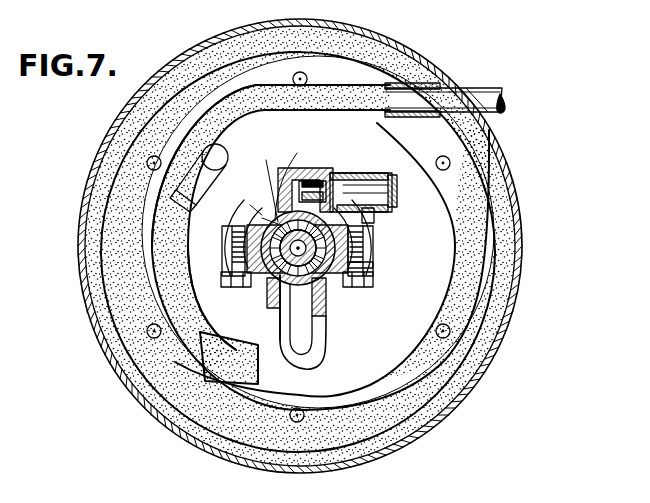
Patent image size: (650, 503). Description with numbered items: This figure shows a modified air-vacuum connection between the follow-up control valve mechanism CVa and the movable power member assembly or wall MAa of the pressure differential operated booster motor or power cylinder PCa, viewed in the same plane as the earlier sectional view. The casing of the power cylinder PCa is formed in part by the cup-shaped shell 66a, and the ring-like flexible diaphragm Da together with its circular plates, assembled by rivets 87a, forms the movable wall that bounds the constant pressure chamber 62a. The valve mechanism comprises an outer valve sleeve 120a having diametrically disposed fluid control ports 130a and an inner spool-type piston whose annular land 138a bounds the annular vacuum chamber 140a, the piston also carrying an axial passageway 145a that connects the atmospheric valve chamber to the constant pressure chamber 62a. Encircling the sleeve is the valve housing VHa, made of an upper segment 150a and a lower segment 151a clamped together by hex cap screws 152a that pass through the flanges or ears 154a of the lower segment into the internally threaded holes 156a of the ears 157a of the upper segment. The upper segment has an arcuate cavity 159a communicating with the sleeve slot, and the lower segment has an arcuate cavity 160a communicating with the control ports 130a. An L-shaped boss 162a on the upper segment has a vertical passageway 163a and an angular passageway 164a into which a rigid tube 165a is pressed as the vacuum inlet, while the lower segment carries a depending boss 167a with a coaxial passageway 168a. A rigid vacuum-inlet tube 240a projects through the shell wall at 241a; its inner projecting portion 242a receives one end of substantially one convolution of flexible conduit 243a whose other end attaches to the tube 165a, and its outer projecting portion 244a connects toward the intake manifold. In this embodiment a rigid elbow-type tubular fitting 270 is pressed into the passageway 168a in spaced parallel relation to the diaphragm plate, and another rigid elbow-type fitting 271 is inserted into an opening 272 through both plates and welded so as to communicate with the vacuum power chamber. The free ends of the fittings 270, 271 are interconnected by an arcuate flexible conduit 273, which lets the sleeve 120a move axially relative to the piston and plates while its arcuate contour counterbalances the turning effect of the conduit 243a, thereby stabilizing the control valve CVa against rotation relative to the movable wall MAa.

The constant pressure chamber 62a is at (501, 229).
The cup-shaped shell 66a is at (517, 318).
The rivet 87a is at (307, 80).
The valve sleeve 120a is at (374, 219).
The fluid control ports 130a is at (327, 273).
The annular land 138a is at (308, 170).
The annular vacuum chamber 140a is at (262, 218).
The axial passageway 145a is at (211, 234).
The upper segment 150a is at (250, 205).
The lower segment 151a is at (323, 293).
The hex cap screws 152a is at (375, 282).
The flanges or ears 154a is at (372, 266).
The internally threaded holes 156a is at (372, 248).
The flanges or ears 157a is at (240, 250).
The arcuate cavity 159a is at (255, 157).
The arcuate cavity 160a is at (273, 303).
The L-shaped boss 162a is at (303, 168).
The vertical passageway 163a is at (310, 180).
The angular passageway 164a is at (328, 176).
The rigid tube 165a is at (375, 190).
The depending boss 167a is at (319, 310).
The coaxial passageway 168a is at (280, 320).
The vacuum-inlet tube 240a is at (479, 73).
The wall projection point 241a is at (472, 91).
The inner projecting portion 242a is at (405, 100).
The flexible conduit 243a is at (475, 272).
The outer projecting portion 244a is at (501, 102).
The elbow-type tubular fitting 270 is at (285, 357).
The elbow-type tubular fitting 271 is at (186, 177).
The opening 272 is at (223, 127).
The flexible conduit 273 is at (210, 379).
The control valve mechanism CVa is at (320, 247).
The flexible diaphragm Da is at (496, 141).
The power cylinder PCa is at (340, 246).
The valve housing VHa is at (263, 286).
The power member assembly MAa is at (396, 352).